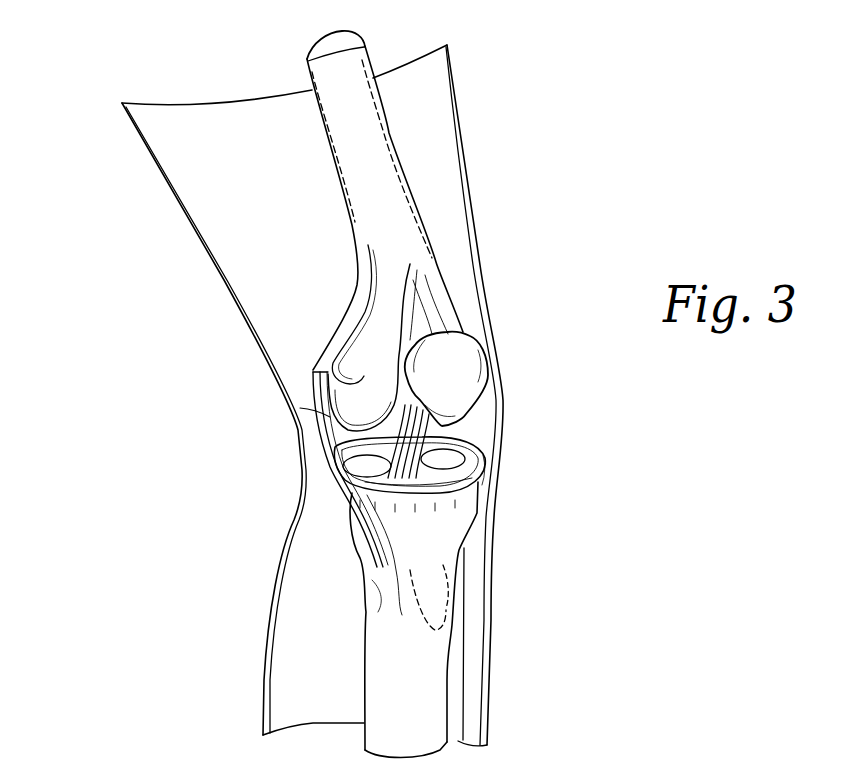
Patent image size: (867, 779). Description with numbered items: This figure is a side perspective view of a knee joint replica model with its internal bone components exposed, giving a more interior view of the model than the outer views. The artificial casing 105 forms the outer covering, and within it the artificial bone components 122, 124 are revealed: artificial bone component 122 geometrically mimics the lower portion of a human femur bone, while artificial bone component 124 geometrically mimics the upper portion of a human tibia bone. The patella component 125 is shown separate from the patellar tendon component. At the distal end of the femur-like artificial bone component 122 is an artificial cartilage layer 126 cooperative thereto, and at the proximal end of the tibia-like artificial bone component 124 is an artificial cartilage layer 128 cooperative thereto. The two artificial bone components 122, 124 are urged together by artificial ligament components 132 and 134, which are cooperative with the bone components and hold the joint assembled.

The artificial casing 105 is at (157, 168).
The artificial bone component 122 is at (347, 63).
The artificial bone component 124 is at (440, 717).
The patella component 125 is at (477, 352).
The artificial cartilage layer 126 is at (363, 435).
The artificial cartilage layer 128 is at (483, 464).
The artificial ligament component 132 is at (351, 530).
The artificial ligament component 134 is at (455, 425).